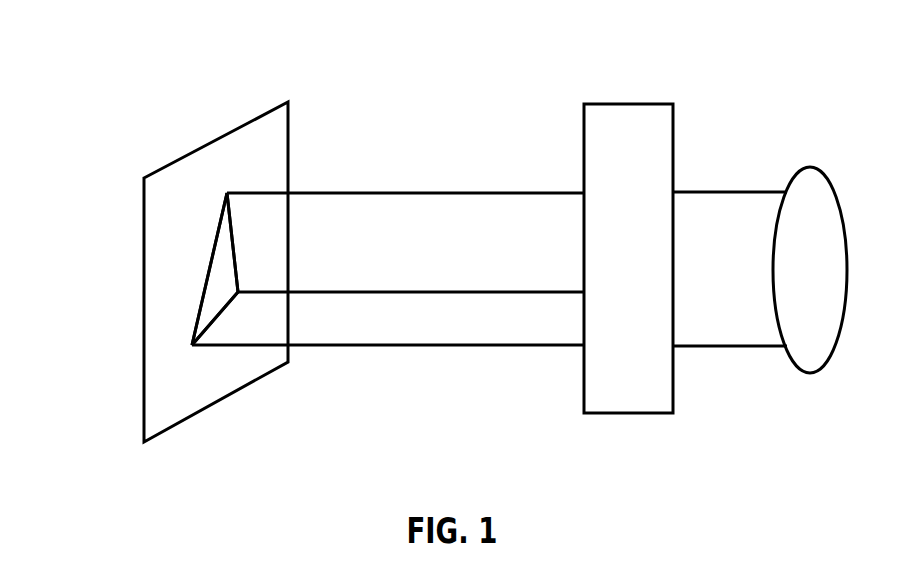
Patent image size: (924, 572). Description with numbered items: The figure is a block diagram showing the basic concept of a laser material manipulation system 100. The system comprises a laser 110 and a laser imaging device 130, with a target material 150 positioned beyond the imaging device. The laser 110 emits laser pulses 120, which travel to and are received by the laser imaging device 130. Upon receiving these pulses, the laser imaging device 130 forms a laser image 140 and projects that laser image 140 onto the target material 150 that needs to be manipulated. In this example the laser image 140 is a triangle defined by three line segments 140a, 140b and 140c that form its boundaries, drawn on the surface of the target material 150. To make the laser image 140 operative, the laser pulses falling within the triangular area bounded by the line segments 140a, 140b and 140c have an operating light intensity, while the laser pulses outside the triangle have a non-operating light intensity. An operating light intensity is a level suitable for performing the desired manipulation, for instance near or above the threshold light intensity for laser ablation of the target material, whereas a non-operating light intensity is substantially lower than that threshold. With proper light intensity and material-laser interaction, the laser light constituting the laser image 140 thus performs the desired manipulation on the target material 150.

The laser material manipulation system 100 is at (146, 75).
The laser 110 is at (831, 283).
The laser pulses 120 is at (703, 190).
The laser imaging device 130 is at (606, 269).
The laser image 140 is at (225, 268).
The line segment 140a is at (237, 243).
The line segment 140b is at (232, 314).
The line segment 140c is at (203, 289).
The target material 150 is at (263, 153).